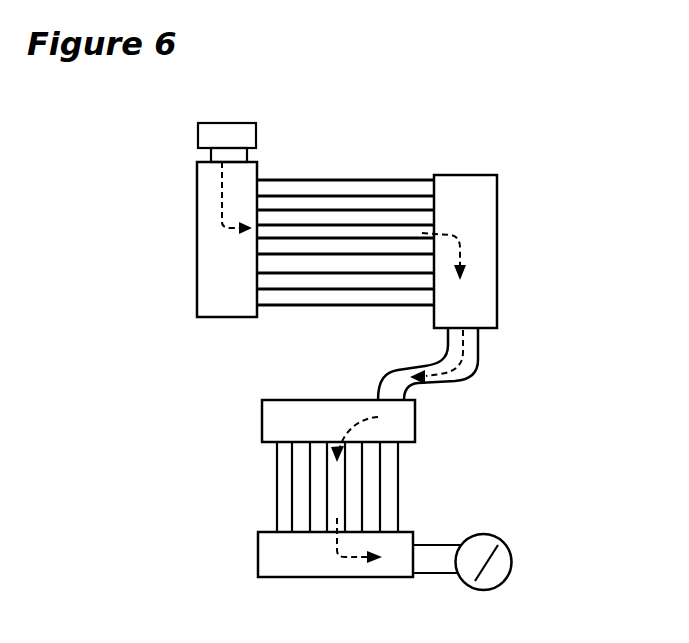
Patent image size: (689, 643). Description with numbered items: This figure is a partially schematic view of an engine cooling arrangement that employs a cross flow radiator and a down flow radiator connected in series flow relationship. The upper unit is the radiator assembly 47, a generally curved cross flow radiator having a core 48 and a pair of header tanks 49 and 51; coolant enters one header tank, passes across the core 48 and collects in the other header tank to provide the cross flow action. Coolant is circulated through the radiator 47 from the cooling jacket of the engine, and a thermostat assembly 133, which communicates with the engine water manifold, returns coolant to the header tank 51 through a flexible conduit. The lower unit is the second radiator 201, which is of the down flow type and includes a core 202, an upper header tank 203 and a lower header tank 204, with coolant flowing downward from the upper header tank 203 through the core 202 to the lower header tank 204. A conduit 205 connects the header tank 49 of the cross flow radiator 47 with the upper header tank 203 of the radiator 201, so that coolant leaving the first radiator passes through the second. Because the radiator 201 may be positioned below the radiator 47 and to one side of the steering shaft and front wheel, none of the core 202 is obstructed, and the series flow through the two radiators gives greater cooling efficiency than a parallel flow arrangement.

The radiator assembly 47 is at (365, 158).
The core 48 is at (317, 183).
The header tank 49 is at (497, 253).
The header tank 51 is at (197, 238).
The thermostat assembly 133 is at (507, 543).
The second radiator 201 is at (300, 488).
The core 202 is at (276, 472).
The upper header tank 203 is at (325, 400).
The lower header tank 204 is at (312, 568).
The conduit 205 is at (478, 378).